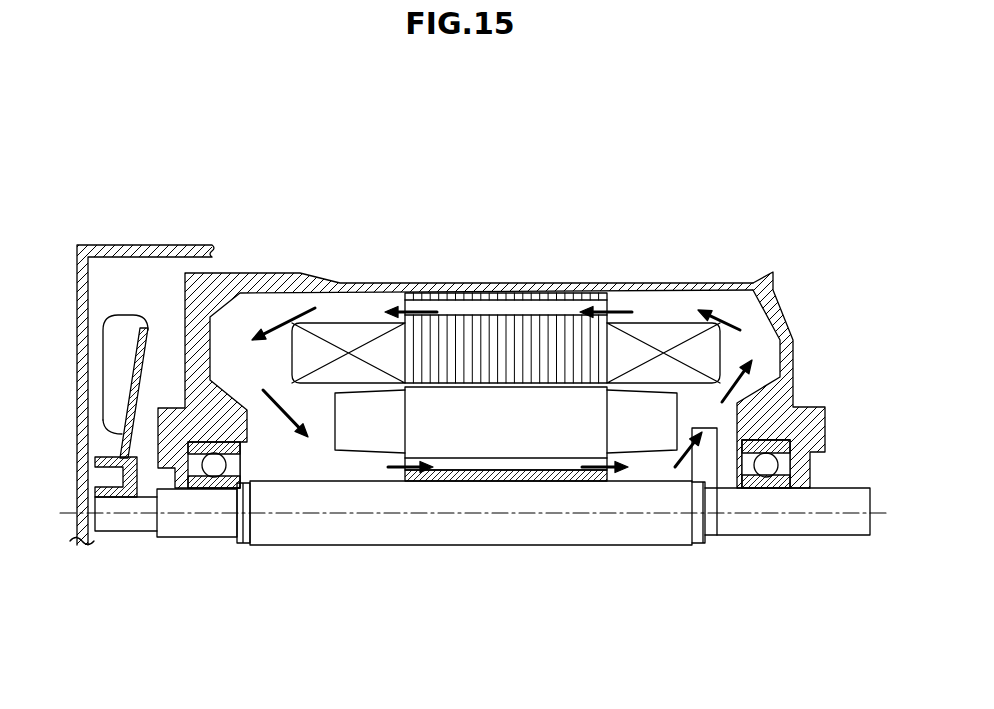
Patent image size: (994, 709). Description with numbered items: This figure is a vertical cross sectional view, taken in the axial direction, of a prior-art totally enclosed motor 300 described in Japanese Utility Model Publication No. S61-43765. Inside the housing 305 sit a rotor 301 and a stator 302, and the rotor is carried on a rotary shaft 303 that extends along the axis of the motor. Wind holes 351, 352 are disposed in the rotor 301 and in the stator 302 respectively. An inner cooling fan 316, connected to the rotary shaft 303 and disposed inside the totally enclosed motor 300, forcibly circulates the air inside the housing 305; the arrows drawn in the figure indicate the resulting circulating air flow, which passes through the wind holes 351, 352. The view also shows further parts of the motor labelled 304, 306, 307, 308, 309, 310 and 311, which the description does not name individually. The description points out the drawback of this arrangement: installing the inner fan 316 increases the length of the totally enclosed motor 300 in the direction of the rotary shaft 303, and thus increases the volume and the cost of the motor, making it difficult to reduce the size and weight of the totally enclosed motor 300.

The totally enclosed motor 300 is at (845, 278).
The rotor 301 is at (535, 430).
The stator 302 is at (500, 292).
The rotary shaft 303 is at (825, 527).
The bearing 304 is at (768, 466).
The housing 305 is at (788, 323).
The rotor body 306 is at (635, 460).
The housing wall 307 is at (172, 244).
The brush 308 is at (125, 338).
The stator coil 309 is at (388, 353).
The air flow passage 310 is at (748, 323).
The air flow space 311 is at (233, 330).
The inner cooling fan 316 is at (707, 457).
The wind hole 351 is at (478, 465).
The wind hole 352 is at (575, 312).